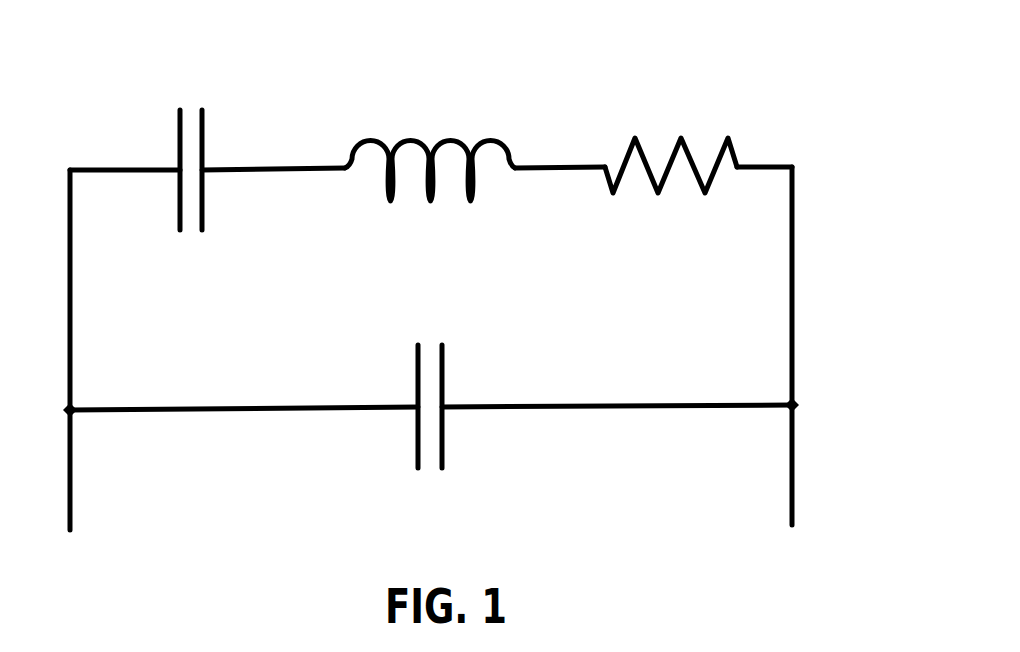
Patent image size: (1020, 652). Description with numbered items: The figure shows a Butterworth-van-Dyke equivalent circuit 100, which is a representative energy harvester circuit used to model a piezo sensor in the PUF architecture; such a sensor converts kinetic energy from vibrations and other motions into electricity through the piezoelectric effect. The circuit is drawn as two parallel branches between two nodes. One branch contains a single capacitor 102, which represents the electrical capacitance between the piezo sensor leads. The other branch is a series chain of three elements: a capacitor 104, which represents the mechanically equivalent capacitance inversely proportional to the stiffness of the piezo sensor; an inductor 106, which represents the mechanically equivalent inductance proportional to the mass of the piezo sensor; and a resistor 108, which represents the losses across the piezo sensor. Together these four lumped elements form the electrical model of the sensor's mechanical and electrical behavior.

The Butterworth-van-Dyke equivalent circuit 100 is at (655, 52).
The capacitor 102 is at (445, 377).
The capacitor 104 is at (205, 130).
The inductor 106 is at (485, 142).
The resistor 108 is at (655, 190).